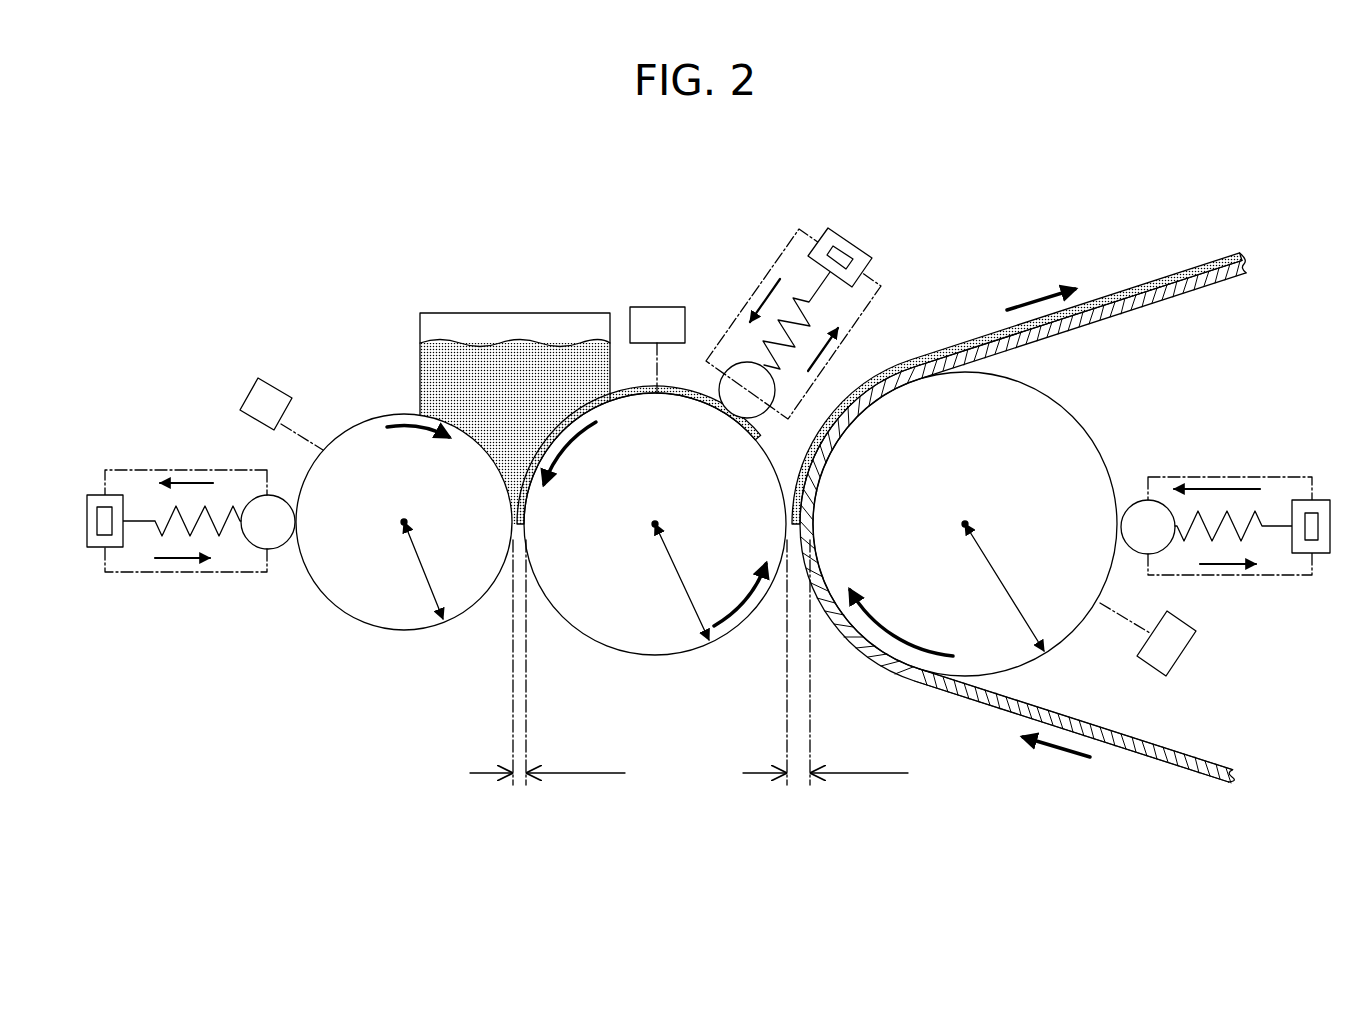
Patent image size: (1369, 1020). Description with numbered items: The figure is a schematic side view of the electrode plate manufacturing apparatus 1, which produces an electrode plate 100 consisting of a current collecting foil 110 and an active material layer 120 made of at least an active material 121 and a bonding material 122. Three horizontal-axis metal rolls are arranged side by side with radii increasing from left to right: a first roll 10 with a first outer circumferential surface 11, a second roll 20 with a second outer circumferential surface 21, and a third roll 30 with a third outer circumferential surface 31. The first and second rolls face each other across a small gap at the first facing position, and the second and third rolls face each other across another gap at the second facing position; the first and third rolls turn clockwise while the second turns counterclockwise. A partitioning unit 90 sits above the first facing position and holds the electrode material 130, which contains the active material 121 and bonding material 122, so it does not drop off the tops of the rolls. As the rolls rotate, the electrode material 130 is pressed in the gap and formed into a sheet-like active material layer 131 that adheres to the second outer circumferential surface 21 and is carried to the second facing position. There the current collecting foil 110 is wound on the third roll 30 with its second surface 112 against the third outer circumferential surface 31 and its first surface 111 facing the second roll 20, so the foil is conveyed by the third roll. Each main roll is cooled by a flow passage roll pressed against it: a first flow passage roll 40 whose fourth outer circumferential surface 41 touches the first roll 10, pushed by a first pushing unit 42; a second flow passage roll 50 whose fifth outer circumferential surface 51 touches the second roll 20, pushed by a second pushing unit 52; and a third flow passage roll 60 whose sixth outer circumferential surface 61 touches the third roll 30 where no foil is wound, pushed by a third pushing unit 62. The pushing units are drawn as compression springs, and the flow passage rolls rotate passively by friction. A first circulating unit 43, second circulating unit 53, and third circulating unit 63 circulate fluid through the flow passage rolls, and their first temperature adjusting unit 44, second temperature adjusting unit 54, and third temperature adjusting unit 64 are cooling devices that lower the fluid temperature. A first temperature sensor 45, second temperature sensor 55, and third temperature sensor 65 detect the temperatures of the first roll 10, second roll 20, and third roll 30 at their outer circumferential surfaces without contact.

The electrode plate manufacturing apparatus 1 is at (415, 226).
The first roll 10 is at (403, 533).
The first outer circumferential surface 11 is at (341, 611).
The second roll 20 is at (655, 502).
The second outer circumferential surface 21 is at (700, 401).
The third roll 30 is at (965, 517).
The third outer circumferential surface 31 is at (1068, 400).
The first flow passage roll 40 is at (254, 534).
The fourth outer circumferential surface 41 is at (283, 549).
The first pushing unit 42 is at (157, 520).
The first circulating unit 43 is at (93, 496).
The first temperature adjusting unit 44 is at (100, 536).
The first temperature sensor 45 is at (253, 388).
The second flow passage roll 50 is at (733, 402).
The fifth outer circumferential surface 51 is at (760, 415).
The second pushing unit 52 is at (800, 305).
The second circulating unit 53 is at (843, 248).
The second temperature adjusting unit 54 is at (870, 262).
The second temperature sensor 55 is at (658, 307).
The third flow passage roll 60 is at (1134, 539).
The sixth outer circumferential surface 61 is at (1134, 503).
The third pushing unit 62 is at (1255, 518).
The third circulating unit 63 is at (1320, 500).
The third temperature adjusting unit 64 is at (1316, 540).
The third temperature sensor 65 is at (1180, 662).
The partitioning unit 90 is at (468, 313).
The electrode plate 100 is at (1019, 488).
The current collecting foil 110 is at (1197, 273).
The first surface 111 is at (1126, 752).
The second surface 112 is at (1165, 750).
The active material layer 120 is at (1127, 291).
The active material 121 is at (535, 262).
The bonding material 122 is at (583, 262).
The electrode material 130 is at (548, 360).
The active material layer 131 is at (670, 664).